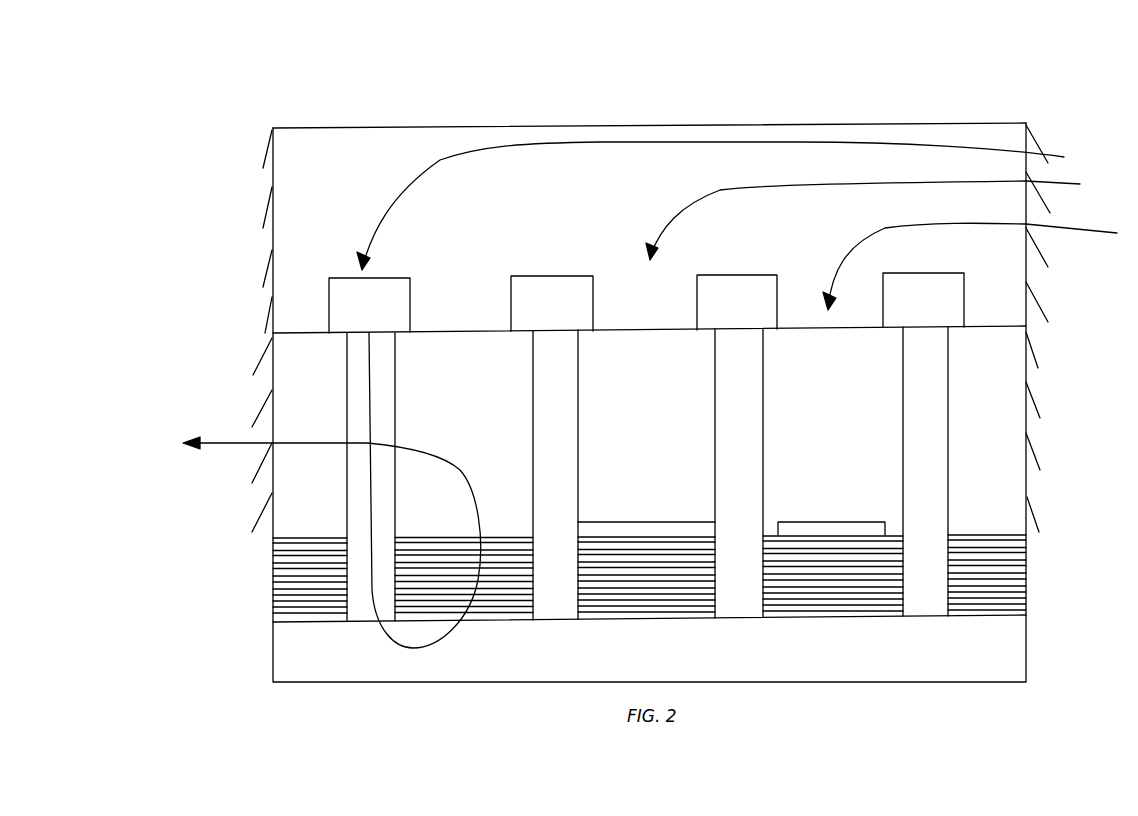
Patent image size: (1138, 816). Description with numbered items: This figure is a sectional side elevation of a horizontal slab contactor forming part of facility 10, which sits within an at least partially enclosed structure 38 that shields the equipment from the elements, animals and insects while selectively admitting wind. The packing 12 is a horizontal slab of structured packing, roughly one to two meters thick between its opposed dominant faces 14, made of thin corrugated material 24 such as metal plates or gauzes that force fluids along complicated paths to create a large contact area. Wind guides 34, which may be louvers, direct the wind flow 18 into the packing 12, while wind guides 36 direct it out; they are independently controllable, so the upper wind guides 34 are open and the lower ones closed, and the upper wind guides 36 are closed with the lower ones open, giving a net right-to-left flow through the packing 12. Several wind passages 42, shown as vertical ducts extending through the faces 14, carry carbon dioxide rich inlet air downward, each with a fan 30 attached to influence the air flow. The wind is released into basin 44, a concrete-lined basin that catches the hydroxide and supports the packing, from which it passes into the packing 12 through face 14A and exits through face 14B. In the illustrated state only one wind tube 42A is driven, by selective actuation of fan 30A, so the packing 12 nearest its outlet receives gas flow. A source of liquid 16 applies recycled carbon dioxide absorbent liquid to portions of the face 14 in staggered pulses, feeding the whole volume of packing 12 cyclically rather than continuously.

The facility 10 is at (239, 53).
The packing 12 is at (731, 515).
The opposed dominant faces 14 is at (674, 581).
The face 14A is at (478, 622).
The face 14B is at (485, 538).
The source of liquid 16 is at (652, 522).
The wind flow 18 is at (971, 149).
The corrugated material 24 is at (1029, 571).
The fan 30 is at (553, 276).
The fan 30A is at (346, 278).
The wind guides 34 is at (1050, 268).
The wind guides 36 is at (264, 213).
The at least partially enclosed structure 38 is at (314, 128).
The wind passage 42 is at (532, 376).
The wind tube 42A is at (398, 376).
The basin 44 is at (320, 668).